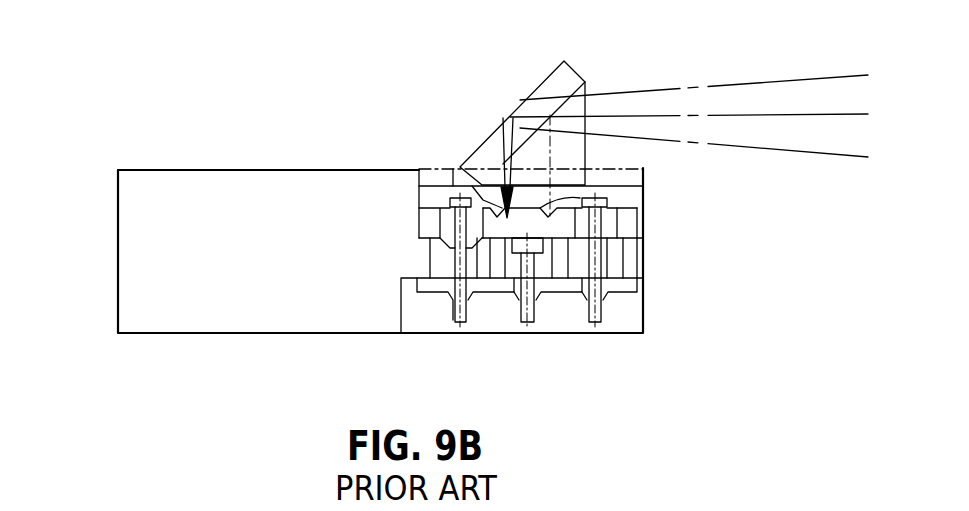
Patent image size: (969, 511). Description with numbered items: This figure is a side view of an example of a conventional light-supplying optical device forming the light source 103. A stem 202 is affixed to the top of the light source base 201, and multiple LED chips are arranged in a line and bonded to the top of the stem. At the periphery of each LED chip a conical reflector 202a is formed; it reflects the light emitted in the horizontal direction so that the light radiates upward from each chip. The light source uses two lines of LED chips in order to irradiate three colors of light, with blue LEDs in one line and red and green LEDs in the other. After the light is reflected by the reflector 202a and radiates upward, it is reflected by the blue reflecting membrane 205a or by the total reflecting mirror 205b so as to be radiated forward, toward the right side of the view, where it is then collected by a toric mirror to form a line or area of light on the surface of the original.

The light source 103 is at (193, 142).
The light source base 201 is at (127, 233).
The stem 202 is at (632, 221).
The conical reflector 202a is at (470, 183).
The blue reflecting membrane 205a is at (587, 84).
The total reflecting mirror 205b is at (541, 83).